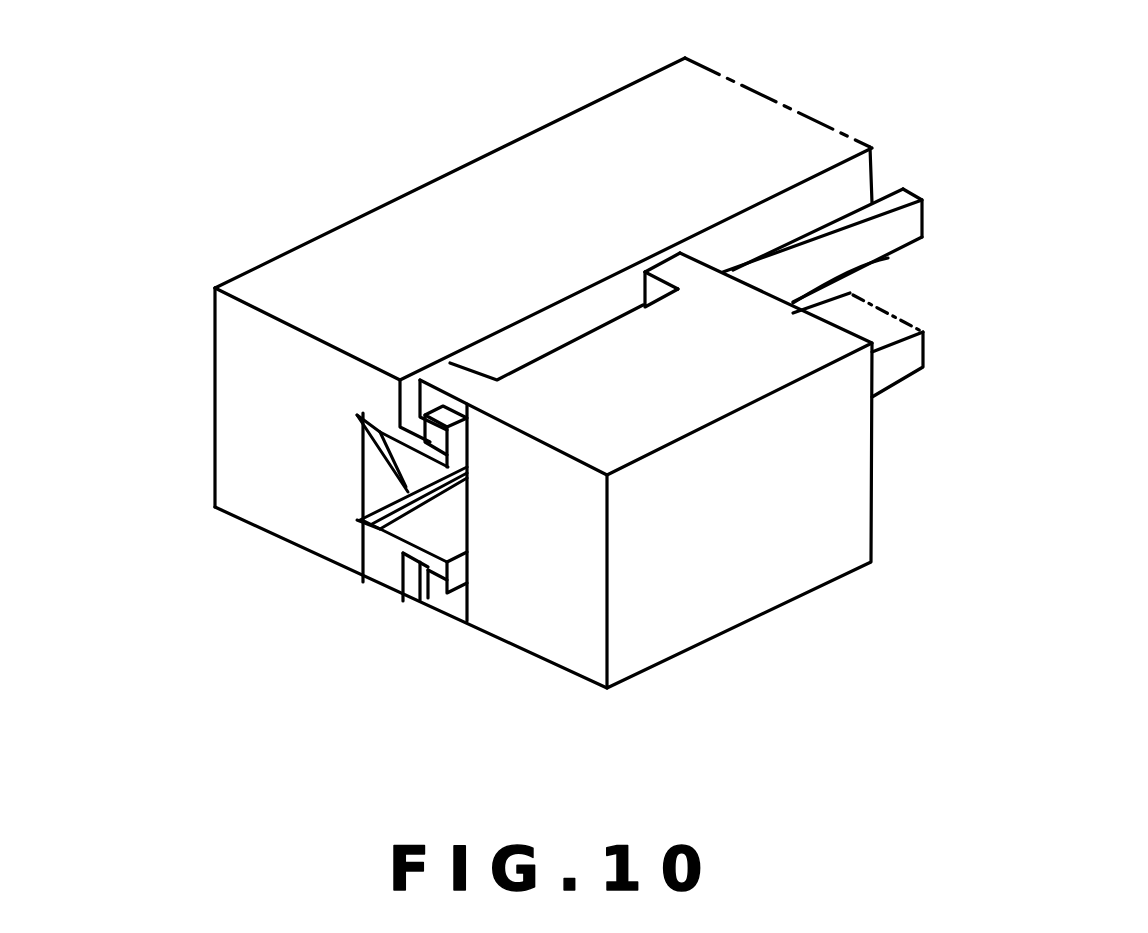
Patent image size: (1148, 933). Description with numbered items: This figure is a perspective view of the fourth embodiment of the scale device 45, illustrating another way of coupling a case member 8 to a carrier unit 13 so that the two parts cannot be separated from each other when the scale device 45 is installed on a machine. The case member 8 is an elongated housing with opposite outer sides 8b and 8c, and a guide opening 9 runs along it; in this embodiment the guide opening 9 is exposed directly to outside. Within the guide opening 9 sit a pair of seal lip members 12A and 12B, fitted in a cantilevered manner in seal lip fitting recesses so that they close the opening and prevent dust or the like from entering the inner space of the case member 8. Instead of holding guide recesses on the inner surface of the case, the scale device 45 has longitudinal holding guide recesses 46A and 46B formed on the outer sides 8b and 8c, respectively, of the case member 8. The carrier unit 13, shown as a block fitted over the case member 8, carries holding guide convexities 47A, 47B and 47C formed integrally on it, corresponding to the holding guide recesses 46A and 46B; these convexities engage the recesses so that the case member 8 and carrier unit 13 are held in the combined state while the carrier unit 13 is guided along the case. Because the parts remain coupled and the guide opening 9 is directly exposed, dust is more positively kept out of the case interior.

The scale device 45 is at (427, 55).
The case member 8 is at (298, 250).
The outer side of case member 8b is at (395, 218).
The outer side of case member 8c is at (248, 525).
The guide opening 9 is at (274, 513).
The seal lip member 12A is at (363, 448).
The seal lip member 12B is at (360, 527).
The carrier unit 13 is at (760, 590).
The holding guide recess 46A is at (400, 403).
The holding guide recess 46B is at (410, 578).
The holding guide convexity 47A is at (450, 378).
The holding guide convexity 47B is at (675, 272).
The holding guide convexity 47C is at (436, 600).